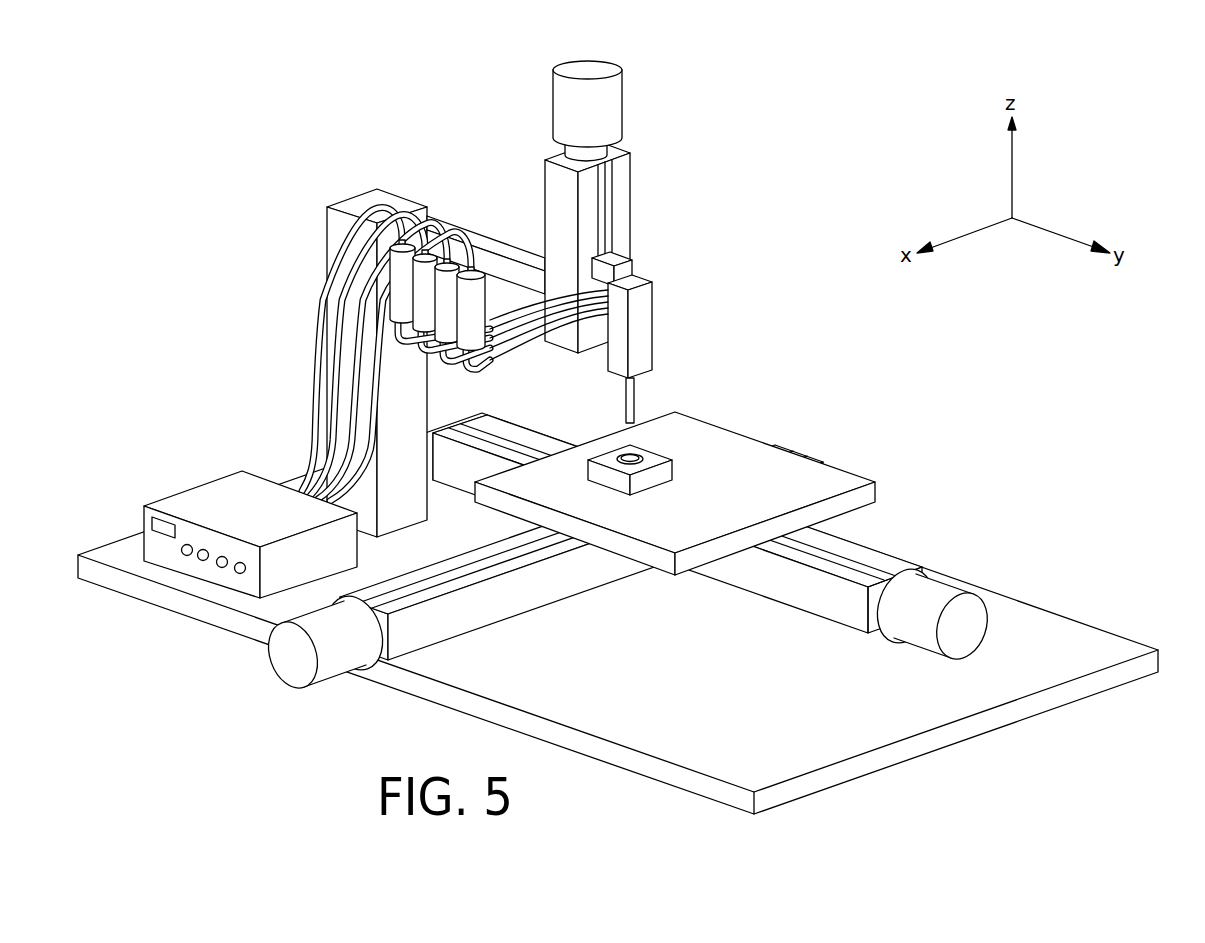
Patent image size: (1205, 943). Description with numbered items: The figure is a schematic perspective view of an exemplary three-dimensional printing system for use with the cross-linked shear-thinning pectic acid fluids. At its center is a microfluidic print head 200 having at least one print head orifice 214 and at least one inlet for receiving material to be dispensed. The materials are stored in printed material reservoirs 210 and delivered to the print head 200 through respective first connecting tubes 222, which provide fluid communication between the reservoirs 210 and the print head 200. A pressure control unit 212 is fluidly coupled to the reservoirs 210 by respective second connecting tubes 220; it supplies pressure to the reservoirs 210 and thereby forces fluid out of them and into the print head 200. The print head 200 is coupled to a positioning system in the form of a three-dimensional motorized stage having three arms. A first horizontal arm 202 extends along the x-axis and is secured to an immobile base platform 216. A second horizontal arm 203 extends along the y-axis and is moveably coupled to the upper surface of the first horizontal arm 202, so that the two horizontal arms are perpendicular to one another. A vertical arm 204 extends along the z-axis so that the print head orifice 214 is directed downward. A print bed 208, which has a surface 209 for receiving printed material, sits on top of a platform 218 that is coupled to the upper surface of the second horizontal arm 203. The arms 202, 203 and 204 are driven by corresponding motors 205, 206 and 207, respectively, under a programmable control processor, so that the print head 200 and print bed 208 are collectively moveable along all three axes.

The microfluidic print head 200 is at (650, 315).
The first horizontal arm 202 is at (483, 620).
The second horizontal arm 203 is at (832, 616).
The vertical arm 204 is at (620, 196).
The motor 205 is at (285, 664).
The motor 206 is at (972, 636).
The motor 207 is at (610, 100).
The print bed 208 is at (652, 478).
The surface 209 is at (632, 455).
The printed material reservoirs 210 is at (477, 300).
The pressure control unit 212 is at (174, 500).
The print head orifice 214 is at (637, 392).
The immobile base platform 216 is at (1102, 634).
The platform 218 is at (870, 447).
The second connecting tubes 220 is at (370, 425).
The first connecting tubes 222 is at (515, 322).